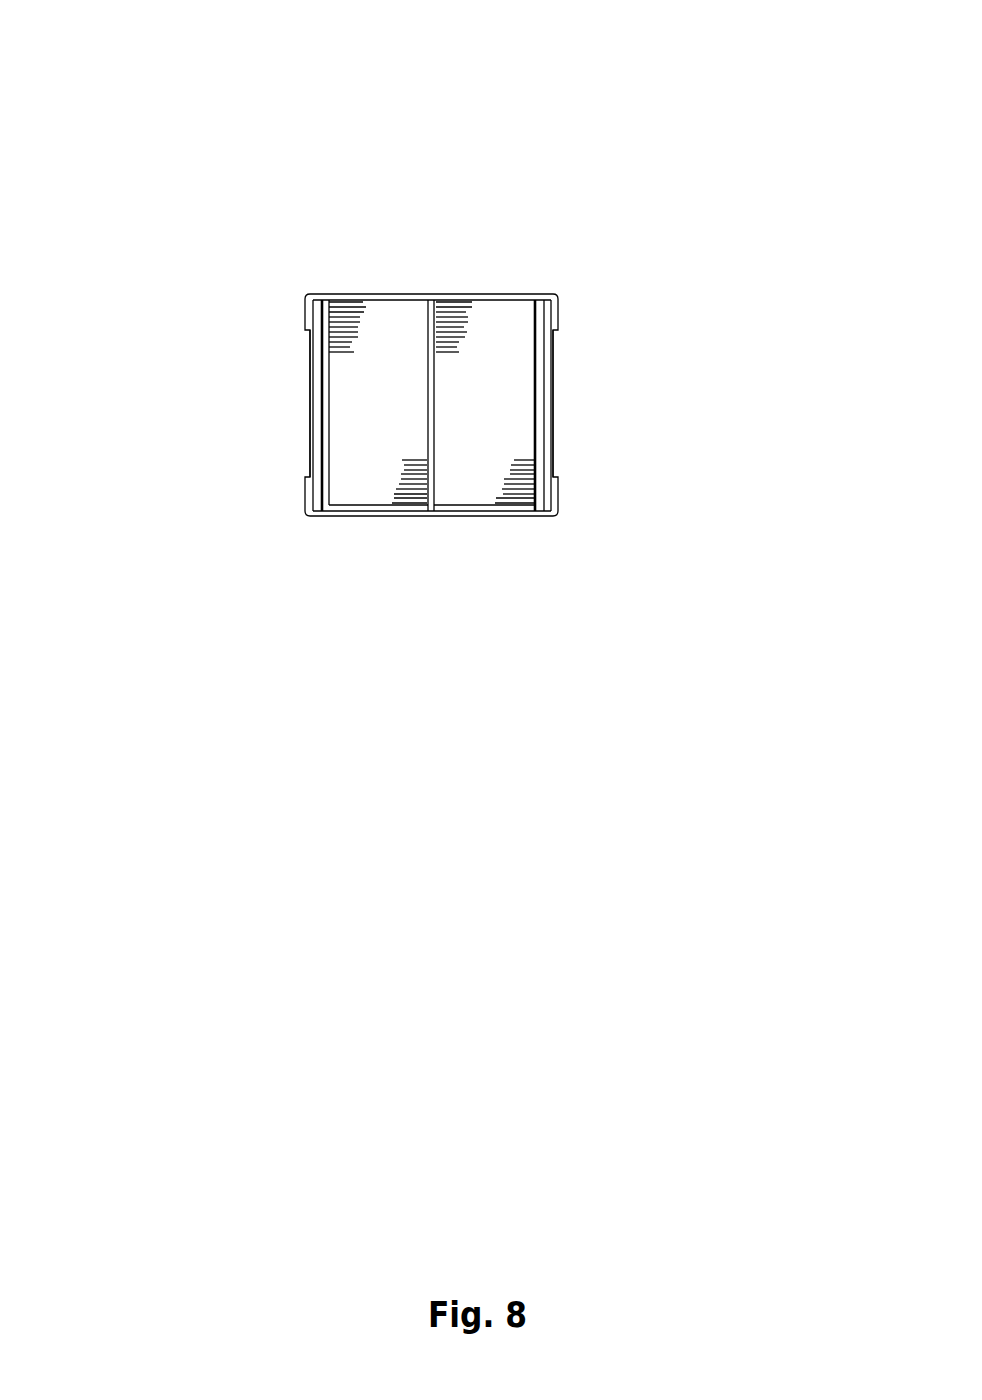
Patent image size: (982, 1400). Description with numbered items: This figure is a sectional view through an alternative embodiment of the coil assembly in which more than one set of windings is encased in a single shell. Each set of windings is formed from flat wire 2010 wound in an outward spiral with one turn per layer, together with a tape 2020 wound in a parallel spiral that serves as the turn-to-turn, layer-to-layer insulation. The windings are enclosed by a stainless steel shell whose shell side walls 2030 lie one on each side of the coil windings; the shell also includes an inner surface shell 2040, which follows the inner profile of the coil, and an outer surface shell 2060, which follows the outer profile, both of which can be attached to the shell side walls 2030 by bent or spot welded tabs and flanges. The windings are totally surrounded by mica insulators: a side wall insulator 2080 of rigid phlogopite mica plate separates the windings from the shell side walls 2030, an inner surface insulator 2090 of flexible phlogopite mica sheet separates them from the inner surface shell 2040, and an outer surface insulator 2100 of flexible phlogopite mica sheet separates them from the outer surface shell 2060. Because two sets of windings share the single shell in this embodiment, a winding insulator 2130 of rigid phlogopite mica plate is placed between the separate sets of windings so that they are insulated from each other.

The flat wire 2010 is at (377, 257).
The tape 2020 is at (431, 279).
The shell side walls 2030 is at (413, 404).
The inner surface shell 2040 is at (391, 479).
The outer surface shell 2060 is at (468, 213).
The side wall insulator 2080 is at (439, 413).
The inner surface insulator 2090 is at (432, 606).
The outer surface insulator 2100 is at (406, 277).
The winding insulator 2130 is at (575, 405).